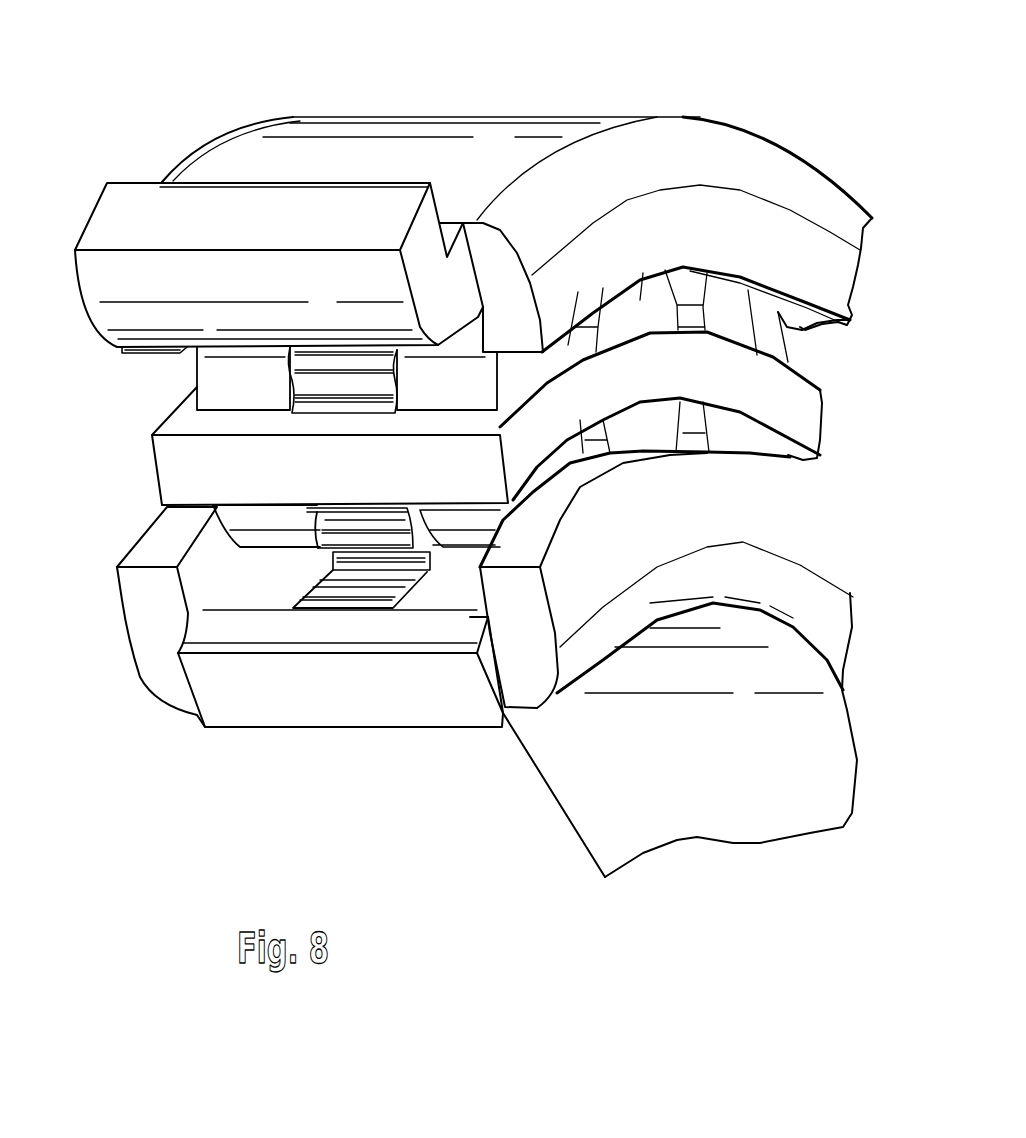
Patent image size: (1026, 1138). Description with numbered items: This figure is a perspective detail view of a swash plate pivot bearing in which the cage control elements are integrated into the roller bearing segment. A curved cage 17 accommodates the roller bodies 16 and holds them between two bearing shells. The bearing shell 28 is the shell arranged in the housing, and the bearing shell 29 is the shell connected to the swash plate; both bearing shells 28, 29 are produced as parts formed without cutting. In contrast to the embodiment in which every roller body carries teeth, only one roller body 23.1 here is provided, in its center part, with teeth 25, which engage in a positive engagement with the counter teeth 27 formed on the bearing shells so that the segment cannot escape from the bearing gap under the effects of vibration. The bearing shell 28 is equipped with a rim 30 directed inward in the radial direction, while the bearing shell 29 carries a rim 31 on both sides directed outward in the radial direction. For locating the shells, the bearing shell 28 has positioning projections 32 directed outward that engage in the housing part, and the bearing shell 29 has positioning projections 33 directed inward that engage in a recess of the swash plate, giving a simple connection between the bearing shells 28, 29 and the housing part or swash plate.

The roller body 16 is at (661, 267).
The cage 17 is at (290, 426).
The roller body 23.1 is at (477, 674).
The teeth 25 is at (313, 659).
The counter teeth 27 is at (361, 683).
The bearing shell 28 is at (517, 182).
The bearing shell 29 is at (680, 755).
The rim 30 is at (444, 234).
The rim 31 is at (417, 619).
The positioning projection 32 is at (309, 193).
The positioning projection 33 is at (340, 669).